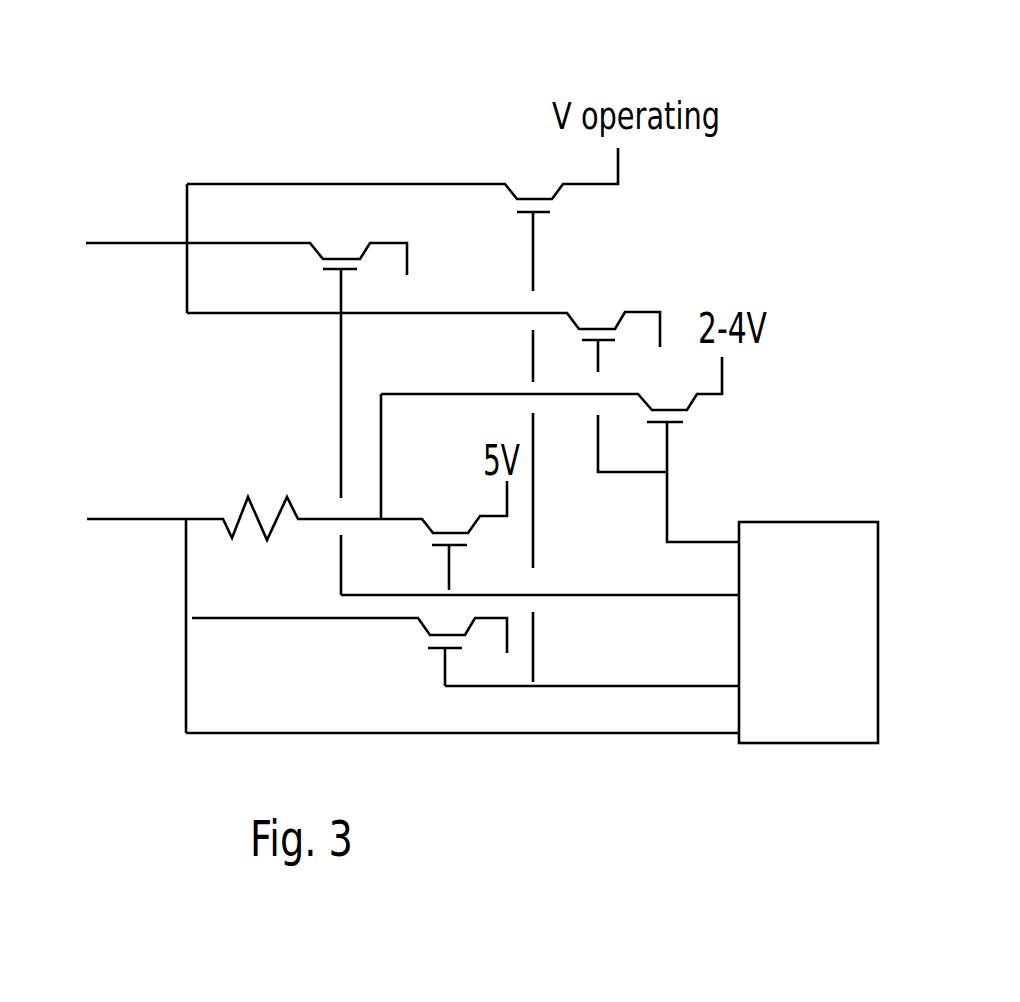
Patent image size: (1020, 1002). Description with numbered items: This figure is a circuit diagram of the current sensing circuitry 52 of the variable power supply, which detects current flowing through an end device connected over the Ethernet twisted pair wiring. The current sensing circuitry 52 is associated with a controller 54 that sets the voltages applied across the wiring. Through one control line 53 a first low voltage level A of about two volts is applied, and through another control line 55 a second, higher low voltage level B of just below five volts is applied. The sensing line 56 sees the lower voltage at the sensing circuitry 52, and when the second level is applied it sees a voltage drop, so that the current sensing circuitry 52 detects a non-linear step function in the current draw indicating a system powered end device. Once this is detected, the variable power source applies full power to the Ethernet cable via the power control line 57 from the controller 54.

The current sensing circuitry 52 is at (390, 167).
The control line 53 is at (705, 542).
The controller 54 is at (837, 723).
The control line 55 is at (557, 686).
The sensing line 56 is at (500, 733).
The power control line 57 is at (560, 595).